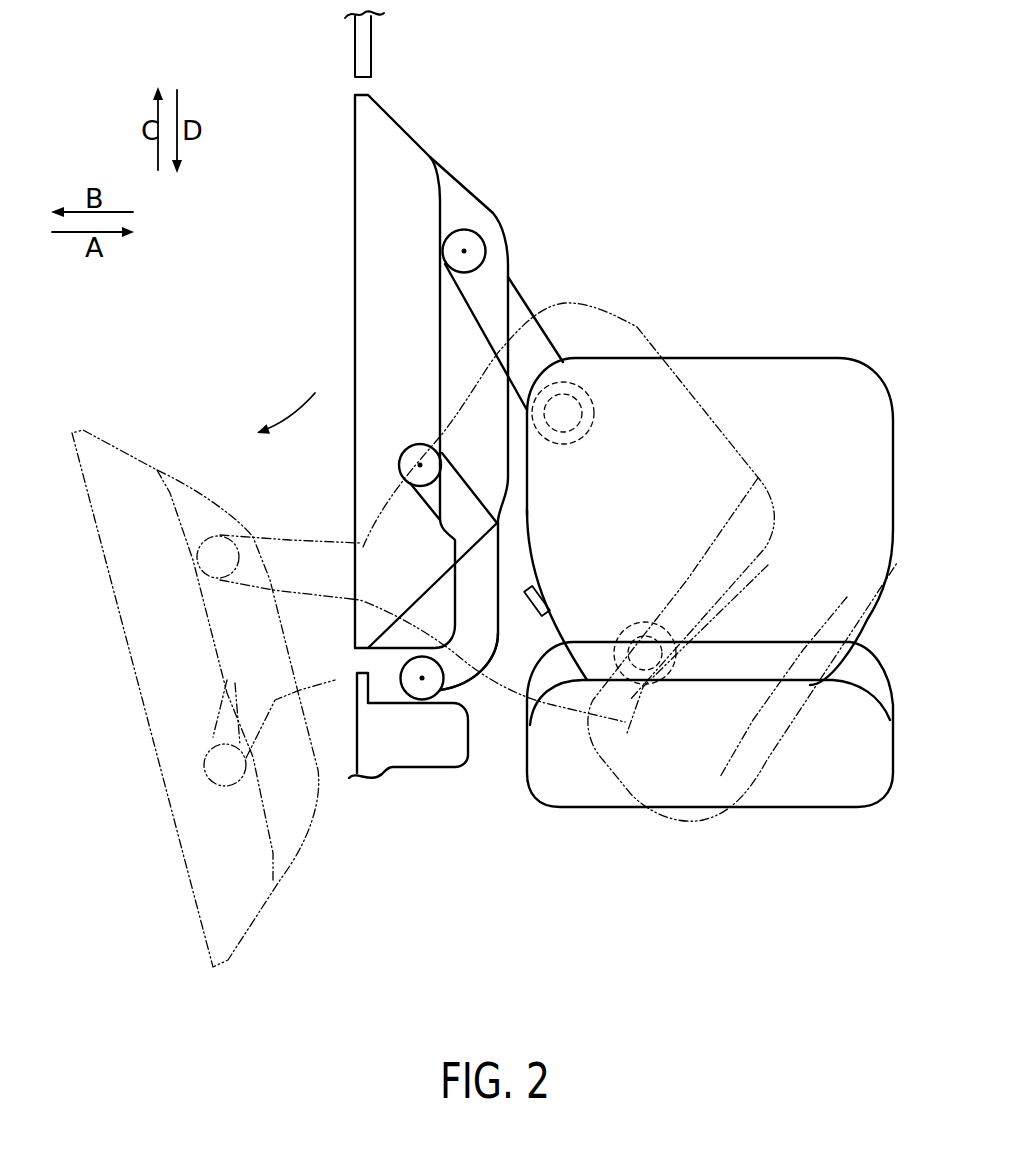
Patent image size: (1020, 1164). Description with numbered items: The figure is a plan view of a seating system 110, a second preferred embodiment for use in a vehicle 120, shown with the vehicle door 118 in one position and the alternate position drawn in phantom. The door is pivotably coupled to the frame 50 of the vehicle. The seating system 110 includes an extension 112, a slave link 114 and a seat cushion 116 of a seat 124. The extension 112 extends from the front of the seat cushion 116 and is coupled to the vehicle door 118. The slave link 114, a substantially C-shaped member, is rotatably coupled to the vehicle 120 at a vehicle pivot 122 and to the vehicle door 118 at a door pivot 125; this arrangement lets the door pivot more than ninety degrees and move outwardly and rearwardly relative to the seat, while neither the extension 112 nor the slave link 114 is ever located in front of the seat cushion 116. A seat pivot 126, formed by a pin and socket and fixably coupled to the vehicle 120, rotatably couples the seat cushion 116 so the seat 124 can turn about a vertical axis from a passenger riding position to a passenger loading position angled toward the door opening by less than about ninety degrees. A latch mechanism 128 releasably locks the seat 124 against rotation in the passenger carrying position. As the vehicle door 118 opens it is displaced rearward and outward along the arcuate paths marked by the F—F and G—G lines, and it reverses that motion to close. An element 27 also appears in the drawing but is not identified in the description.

The seating system 110 is at (234, 97).
The vehicle 120 is at (529, 129).
The vehicle door 118 is at (357, 267).
The extension 112 is at (530, 300).
The door pivot 125 is at (420, 465).
The seat 124 is at (809, 354).
The seat cushion 116 is at (878, 375).
The latch mechanism 128 is at (537, 607).
The pivot 27 is at (645, 653).
The seat pivot 126 is at (628, 723).
The vehicle pivot 122 is at (422, 678).
The slave link 114 is at (460, 690).
The frame 50 is at (443, 755).